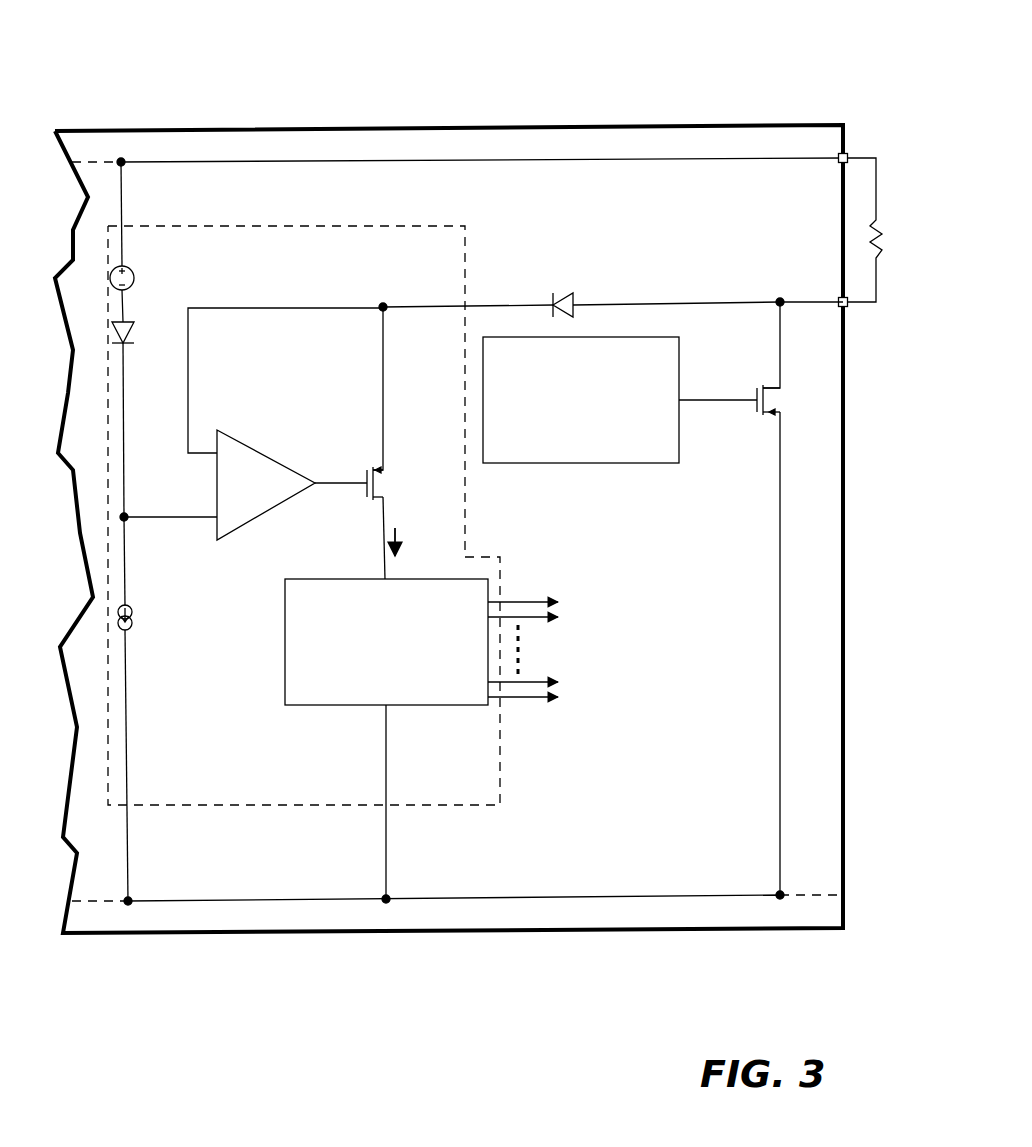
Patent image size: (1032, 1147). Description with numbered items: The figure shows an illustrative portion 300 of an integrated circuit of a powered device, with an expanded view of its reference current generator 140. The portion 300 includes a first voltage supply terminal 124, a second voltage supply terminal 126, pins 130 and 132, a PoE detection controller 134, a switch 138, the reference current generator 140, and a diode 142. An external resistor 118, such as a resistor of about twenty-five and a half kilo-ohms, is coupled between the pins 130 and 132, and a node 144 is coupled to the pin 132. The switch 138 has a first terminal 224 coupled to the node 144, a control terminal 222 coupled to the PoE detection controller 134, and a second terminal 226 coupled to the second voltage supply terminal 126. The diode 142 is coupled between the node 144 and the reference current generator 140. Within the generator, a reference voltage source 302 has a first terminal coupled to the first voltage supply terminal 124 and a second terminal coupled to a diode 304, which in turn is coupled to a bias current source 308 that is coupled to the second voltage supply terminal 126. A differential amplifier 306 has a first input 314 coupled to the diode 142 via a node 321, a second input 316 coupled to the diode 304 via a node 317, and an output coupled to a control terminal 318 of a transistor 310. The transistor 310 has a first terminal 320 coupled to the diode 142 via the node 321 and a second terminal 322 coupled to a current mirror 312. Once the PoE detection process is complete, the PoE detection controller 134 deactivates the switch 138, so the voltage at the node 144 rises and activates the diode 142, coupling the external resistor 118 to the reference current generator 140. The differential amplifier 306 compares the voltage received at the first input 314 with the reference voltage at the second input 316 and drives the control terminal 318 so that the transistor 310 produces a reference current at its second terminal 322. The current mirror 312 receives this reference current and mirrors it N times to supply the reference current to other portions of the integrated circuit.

The portion of an integrated circuit 300 is at (711, 57).
The first voltage supply terminal 124 is at (268, 161).
The second voltage supply terminal 126 is at (291, 901).
The pin 130 is at (846, 154).
The pin 132 is at (846, 306).
The external resistor 118 is at (870, 238).
The reference current generator 140 is at (235, 226).
The diode 142 is at (572, 292).
The node 144 is at (778, 299).
The reference voltage source 302 is at (134, 275).
The diode 304 is at (134, 325).
The differential amplifier 306 is at (250, 520).
The bias current source 308 is at (133, 622).
The transistor 310 is at (392, 481).
The current mirror 312 is at (345, 705).
The first input 314 is at (188, 392).
The second input 316 is at (165, 519).
The node 317 is at (124, 512).
The control terminal 318 is at (333, 481).
The first terminal 320 is at (388, 418).
The node 321 is at (383, 305).
The second terminal 322 is at (383, 517).
The PoE detection controller 134 is at (590, 463).
The switch 138 is at (785, 398).
The control terminal 222 is at (735, 398).
The first terminal 224 is at (779, 352).
The second terminal 226 is at (777, 432).